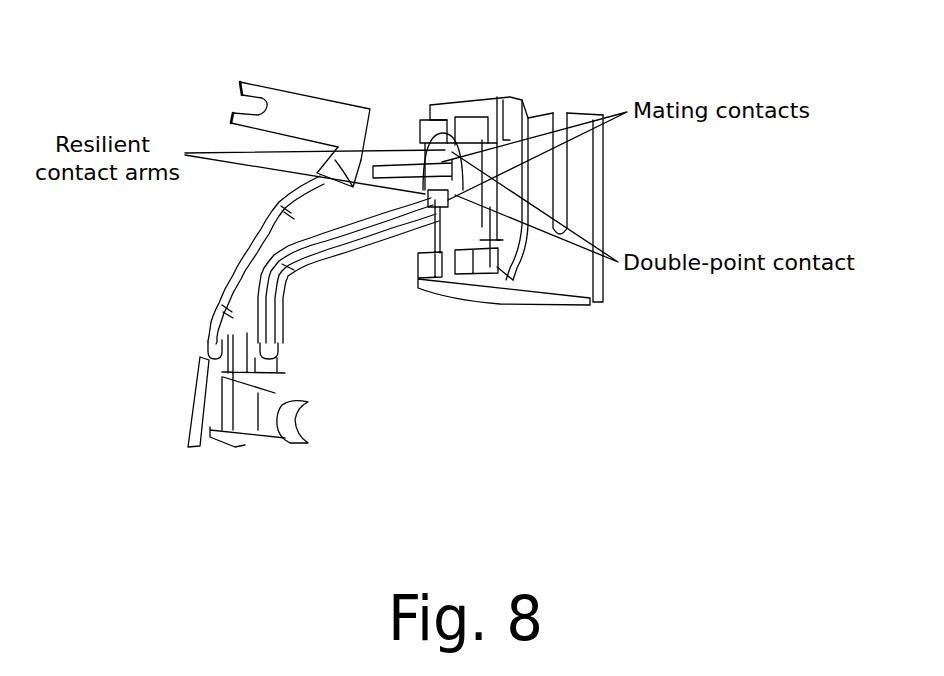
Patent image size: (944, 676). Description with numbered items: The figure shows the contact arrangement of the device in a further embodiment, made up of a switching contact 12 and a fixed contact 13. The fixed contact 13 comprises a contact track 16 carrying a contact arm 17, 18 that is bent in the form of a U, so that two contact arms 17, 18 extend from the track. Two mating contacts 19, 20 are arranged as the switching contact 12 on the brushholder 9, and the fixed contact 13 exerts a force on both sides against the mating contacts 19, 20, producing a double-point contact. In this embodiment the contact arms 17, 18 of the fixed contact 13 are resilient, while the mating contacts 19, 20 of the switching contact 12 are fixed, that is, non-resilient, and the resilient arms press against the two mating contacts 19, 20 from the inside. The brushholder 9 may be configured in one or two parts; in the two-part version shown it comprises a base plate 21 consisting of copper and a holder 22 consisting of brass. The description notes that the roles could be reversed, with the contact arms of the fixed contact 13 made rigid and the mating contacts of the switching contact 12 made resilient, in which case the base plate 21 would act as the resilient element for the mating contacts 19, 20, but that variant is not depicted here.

The brushholder 9 is at (608, 106).
The switching contact 12 is at (426, 248).
The fixed contact 13 is at (381, 251).
The contact track 16 is at (266, 274).
The contact arm 17 is at (522, 303).
The contact arm 18 is at (482, 130).
The mating contact 19 is at (447, 255).
The mating contact 20 is at (427, 123).
The base plate 21 is at (452, 288).
The holder 22 is at (575, 275).